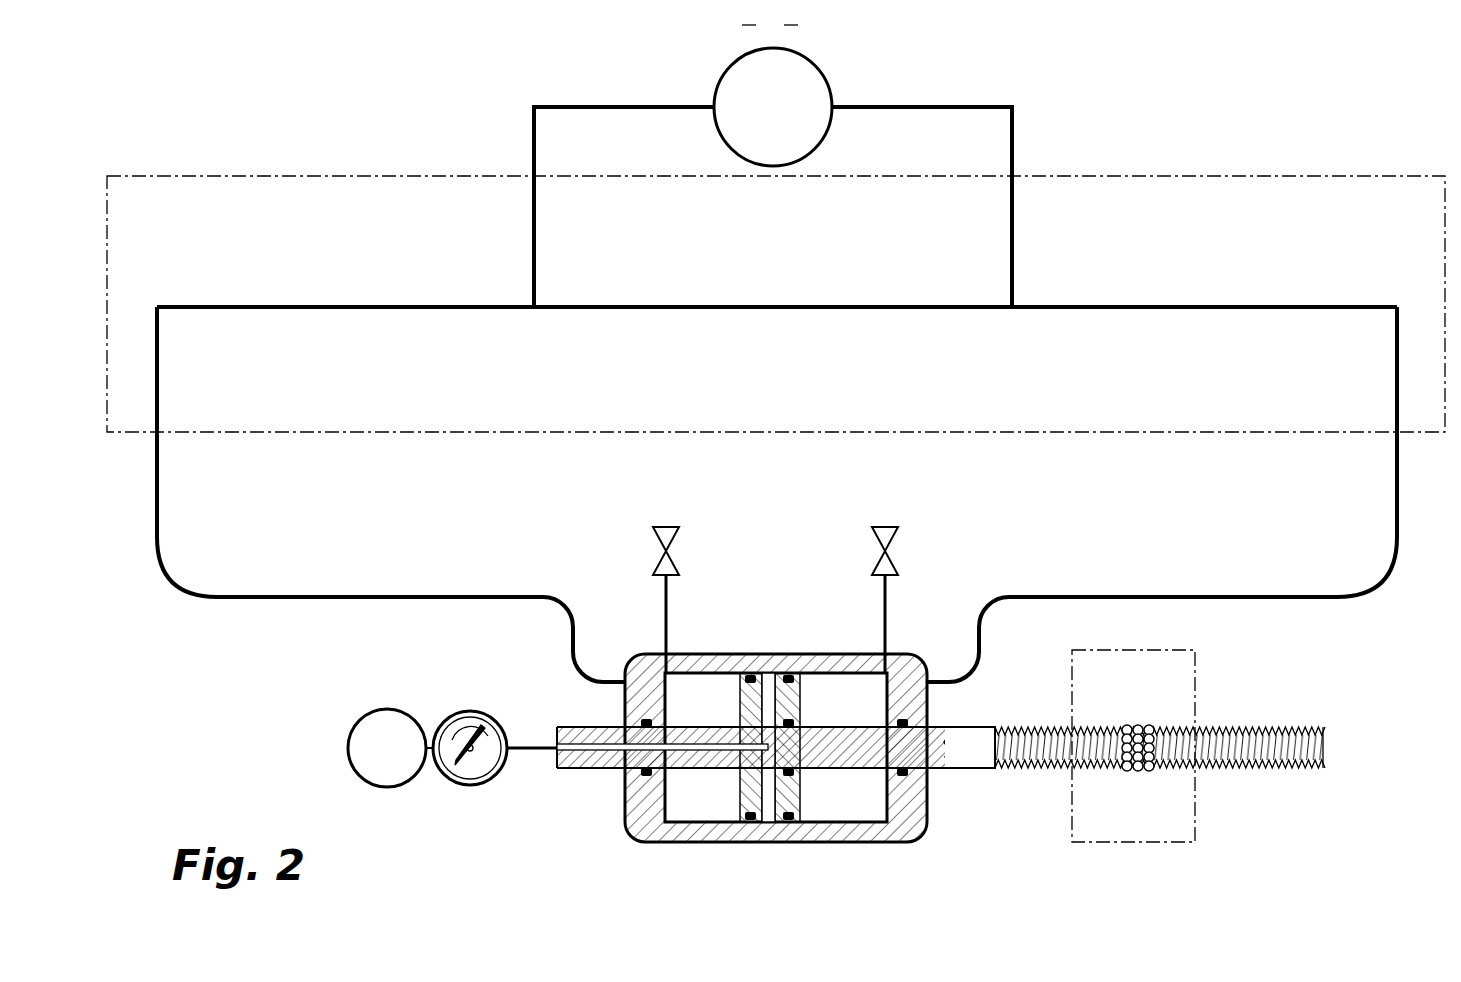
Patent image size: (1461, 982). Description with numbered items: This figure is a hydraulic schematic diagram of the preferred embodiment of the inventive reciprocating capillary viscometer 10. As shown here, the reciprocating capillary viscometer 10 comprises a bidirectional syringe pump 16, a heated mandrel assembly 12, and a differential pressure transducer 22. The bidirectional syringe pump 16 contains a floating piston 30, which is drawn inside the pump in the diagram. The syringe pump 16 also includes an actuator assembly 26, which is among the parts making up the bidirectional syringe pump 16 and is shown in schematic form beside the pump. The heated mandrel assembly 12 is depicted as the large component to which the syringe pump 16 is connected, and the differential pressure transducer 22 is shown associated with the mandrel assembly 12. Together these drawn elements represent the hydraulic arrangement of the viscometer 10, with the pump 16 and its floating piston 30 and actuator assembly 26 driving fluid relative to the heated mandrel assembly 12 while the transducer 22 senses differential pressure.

The reciprocating capillary viscometer 10 is at (1338, 140).
The heated mandrel assembly 12 is at (1237, 175).
The bidirectional syringe pump 16 is at (637, 832).
The differential pressure transducer 22 is at (830, 83).
The actuator assembly 26 is at (1195, 682).
The floating piston 30 is at (772, 682).